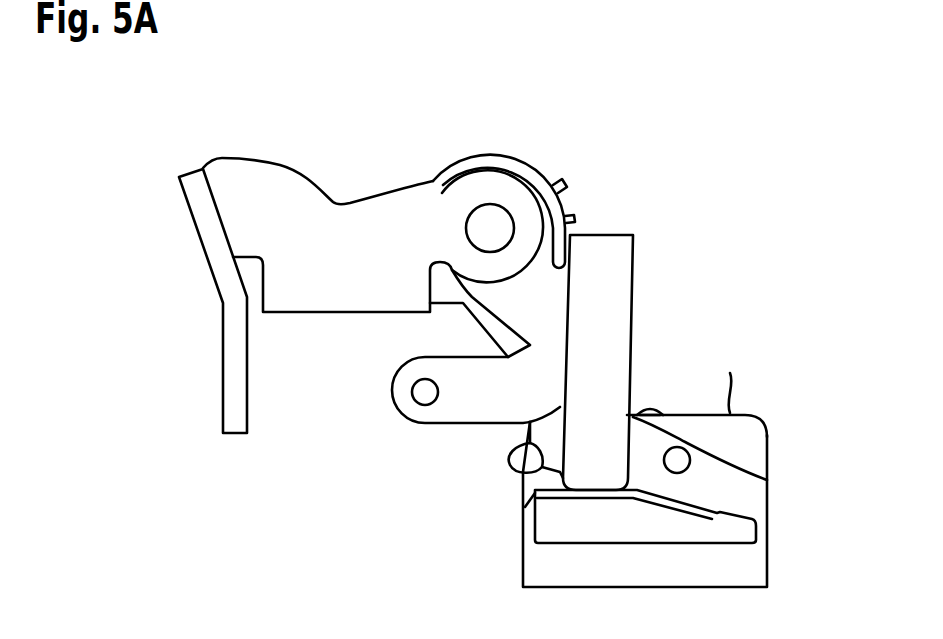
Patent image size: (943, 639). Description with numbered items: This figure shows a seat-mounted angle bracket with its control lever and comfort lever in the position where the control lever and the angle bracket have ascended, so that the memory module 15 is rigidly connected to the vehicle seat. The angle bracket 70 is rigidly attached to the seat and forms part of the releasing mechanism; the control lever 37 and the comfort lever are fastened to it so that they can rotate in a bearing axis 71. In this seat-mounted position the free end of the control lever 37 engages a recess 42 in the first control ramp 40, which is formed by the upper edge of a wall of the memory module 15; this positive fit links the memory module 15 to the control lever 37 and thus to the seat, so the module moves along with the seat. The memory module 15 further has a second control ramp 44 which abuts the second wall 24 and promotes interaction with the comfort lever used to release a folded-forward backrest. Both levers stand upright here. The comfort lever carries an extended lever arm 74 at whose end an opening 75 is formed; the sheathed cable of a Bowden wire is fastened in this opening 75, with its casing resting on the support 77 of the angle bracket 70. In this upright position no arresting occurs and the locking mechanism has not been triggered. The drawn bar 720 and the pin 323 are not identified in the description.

The support 77 is at (223, 368).
The angle bracket 70 is at (348, 203).
The bearing axis 71 is at (490, 228).
The control lever 37 is at (567, 203).
The extended lever arm 74 is at (397, 393).
The opening 75 is at (425, 392).
The plunger bar 720 is at (628, 302).
The recess 42 is at (523, 472).
The memory module 15 is at (523, 543).
The first control ramp 40 is at (747, 470).
The second wall 24 is at (648, 423).
The pivot pin of block 323 is at (677, 460).
The second control ramp 44 is at (755, 520).